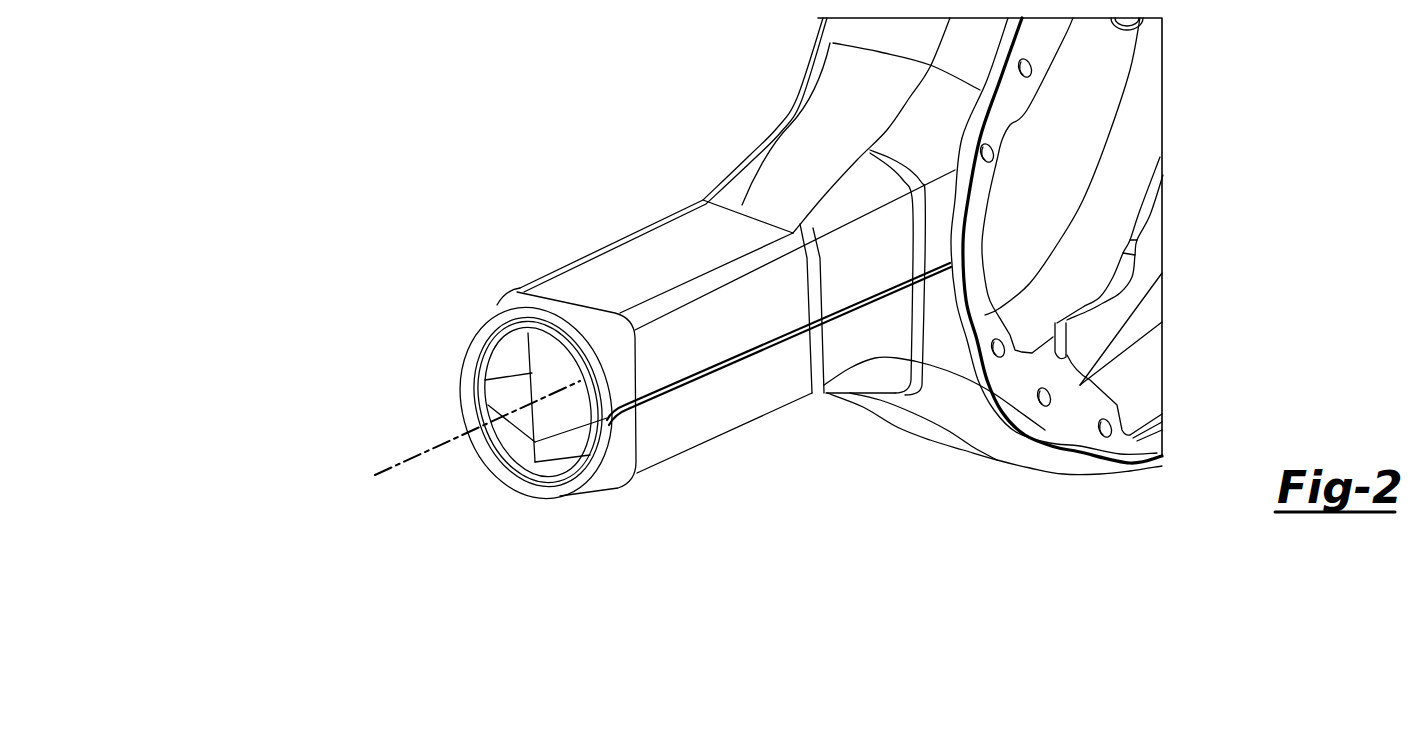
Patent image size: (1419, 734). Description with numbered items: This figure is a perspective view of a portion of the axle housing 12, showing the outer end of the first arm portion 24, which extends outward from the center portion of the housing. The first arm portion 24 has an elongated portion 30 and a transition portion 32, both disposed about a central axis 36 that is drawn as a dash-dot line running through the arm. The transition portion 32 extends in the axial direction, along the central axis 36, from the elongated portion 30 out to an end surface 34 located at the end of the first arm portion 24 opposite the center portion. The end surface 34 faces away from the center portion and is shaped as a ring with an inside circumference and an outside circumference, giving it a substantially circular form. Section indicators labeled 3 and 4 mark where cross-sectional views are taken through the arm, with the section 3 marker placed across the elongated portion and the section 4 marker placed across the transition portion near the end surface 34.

The axle housing 12 is at (604, 94).
The first arm portion 24 is at (708, 195).
The elongated portion 30 is at (778, 387).
The transition portion 32 is at (625, 375).
The end surface 34 is at (482, 342).
The central axis 36 is at (395, 472).
The section line 3- 3 is at (557, 252).
The section line 4- 4 is at (462, 372).